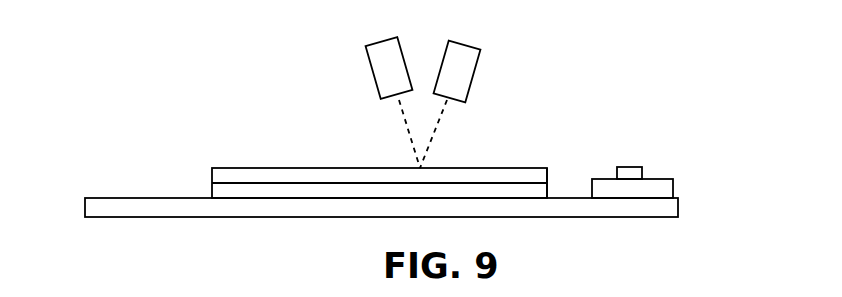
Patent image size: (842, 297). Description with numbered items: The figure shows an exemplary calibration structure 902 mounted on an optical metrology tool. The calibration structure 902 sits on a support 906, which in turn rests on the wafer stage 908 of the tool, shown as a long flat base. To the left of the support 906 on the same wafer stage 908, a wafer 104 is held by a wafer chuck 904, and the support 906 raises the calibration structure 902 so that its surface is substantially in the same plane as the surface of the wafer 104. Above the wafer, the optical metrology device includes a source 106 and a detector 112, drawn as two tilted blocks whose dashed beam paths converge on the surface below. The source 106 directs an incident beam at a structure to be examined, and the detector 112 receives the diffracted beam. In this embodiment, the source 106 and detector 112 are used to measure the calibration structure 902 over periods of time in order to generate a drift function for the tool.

The wafer 104 is at (297, 167).
The source 106 is at (378, 40).
The detector 112 is at (470, 40).
The calibration structure 902 is at (626, 167).
The wafer chuck 904 is at (549, 190).
The support 906 is at (674, 188).
The wafer stage 908 is at (679, 208).